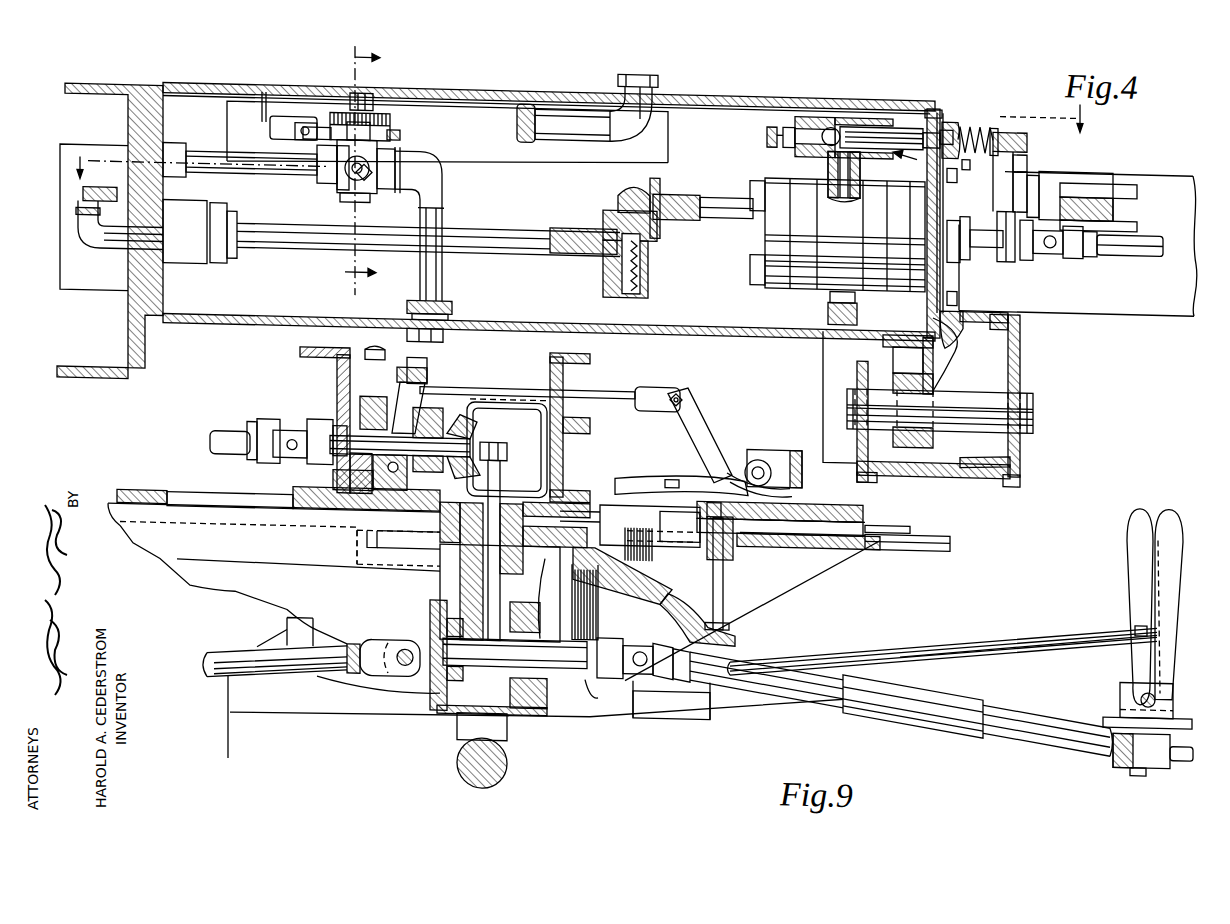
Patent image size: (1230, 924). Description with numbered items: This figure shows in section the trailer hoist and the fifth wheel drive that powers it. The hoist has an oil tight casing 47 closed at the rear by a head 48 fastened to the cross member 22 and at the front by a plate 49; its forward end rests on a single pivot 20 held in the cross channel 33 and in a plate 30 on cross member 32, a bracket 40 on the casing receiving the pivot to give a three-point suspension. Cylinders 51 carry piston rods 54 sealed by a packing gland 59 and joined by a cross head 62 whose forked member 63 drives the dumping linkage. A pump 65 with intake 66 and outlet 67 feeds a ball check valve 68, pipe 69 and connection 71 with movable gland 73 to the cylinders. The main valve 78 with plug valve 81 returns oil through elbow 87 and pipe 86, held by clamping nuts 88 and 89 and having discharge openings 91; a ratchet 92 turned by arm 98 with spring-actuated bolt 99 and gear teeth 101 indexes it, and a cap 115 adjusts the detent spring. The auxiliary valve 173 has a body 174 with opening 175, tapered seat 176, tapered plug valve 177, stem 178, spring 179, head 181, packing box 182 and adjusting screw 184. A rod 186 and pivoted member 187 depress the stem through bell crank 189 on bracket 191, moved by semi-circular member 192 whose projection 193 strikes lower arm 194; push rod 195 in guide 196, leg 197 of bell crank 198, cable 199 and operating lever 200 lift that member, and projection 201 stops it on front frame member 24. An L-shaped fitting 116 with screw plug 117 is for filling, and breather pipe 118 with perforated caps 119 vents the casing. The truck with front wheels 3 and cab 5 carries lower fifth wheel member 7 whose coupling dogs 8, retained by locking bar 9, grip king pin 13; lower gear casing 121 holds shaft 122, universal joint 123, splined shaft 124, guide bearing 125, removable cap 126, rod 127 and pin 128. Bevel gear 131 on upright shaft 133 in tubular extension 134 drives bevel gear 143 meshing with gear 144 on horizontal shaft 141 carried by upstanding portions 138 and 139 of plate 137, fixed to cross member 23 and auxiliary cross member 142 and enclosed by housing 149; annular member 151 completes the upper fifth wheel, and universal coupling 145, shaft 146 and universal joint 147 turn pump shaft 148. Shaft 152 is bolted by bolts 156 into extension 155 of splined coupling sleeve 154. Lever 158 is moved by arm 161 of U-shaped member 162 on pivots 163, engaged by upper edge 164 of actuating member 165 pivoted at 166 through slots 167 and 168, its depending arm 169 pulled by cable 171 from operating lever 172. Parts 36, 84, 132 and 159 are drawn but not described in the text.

In FIG. 4, the front wheels 3 is at (579, 141).
In FIG. 4, the cab 5 is at (357, 171).
In FIG. 9, the lower fifth wheel member 7 is at (200, 560).
In FIG. 9, the coupling dogs 8 is at (367, 544).
In FIG. 9, the locking bar 9 is at (565, 512).
In FIG. 9, the king pin 13 is at (440, 578).
In FIG. 4, the pivot 20 is at (1033, 402).
In FIG. 4, the cross member 22 is at (112, 391).
In FIG. 9, the cross member 23 is at (300, 358).
In FIG. 9, the front frame member 24 is at (860, 506).
In FIG. 4, the plate 30 is at (823, 437).
In FIG. 4, the cross member 32 is at (1020, 472).
In FIG. 4, the cross channel 33 is at (1012, 455).
In FIG. 4, the housing 36 is at (1140, 305).
In FIG. 4, the bracket 40 is at (935, 383).
In FIG. 4, the casing 47 is at (255, 334).
In FIG. 4, the head 48 is at (163, 310).
In FIG. 4, the plate 49 is at (927, 300).
In FIG. 4, the cylinders 51 is at (753, 262).
In FIG. 4, the piston rods 54 is at (1035, 182).
In FIG. 4, the packing gland 59 is at (1012, 170).
In FIG. 4, the cross head 62 is at (1098, 166).
In FIG. 4, the forked member 63 is at (1132, 175).
In FIG. 4, the pump 65 is at (771, 286).
In FIG. 4, the intake 66 is at (828, 309).
In FIG. 4, the outlet 67 is at (718, 218).
In FIG. 4, the ball check valve 68 is at (619, 196).
In FIG. 4, the pipe 69 is at (505, 231).
In FIG. 4, the connection 71 is at (200, 273).
In FIG. 4, the movable gland 73 is at (222, 216).
In FIG. 4, the valve 78 is at (337, 197).
In FIG. 4, the plug valve 81 is at (396, 162).
In FIG. 4, the shaft 84 is at (193, 160).
In FIG. 4, the pipe 86 is at (443, 281).
In FIG. 4, the elbow 87 is at (445, 190).
In FIG. 4, the clamping nut 88 is at (450, 306).
In FIG. 4, the clamping nut 89 is at (445, 341).
In FIG. 4, the discharge openings 91 is at (420, 303).
In FIG. 4, the ratchet 92 is at (398, 133).
In FIG. 4, the arm 98 is at (290, 124).
In FIG. 4, the spring-actuated bolt 99 is at (268, 128).
In FIG. 4, the gear teeth 101 is at (386, 118).
In FIG. 4, the cap 115 is at (372, 182).
In FIG. 4, the L-shaped fitting 116 is at (100, 260).
In FIG. 4, the screw plug 117 is at (100, 199).
In FIG. 4, the breather pipe 118 is at (565, 110).
In FIG. 4, the perforated caps 119 is at (640, 74).
In FIG. 9, the lower gear casing 121 is at (545, 716).
In FIG. 9, the shaft 122 is at (530, 680).
In FIG. 9, the universal joint 123 is at (640, 673).
In FIG. 9, the splined shaft 124 is at (707, 717).
In FIG. 9, the guide bearing 125 is at (452, 684).
In FIG. 9, the removable plate or cap 126 is at (435, 718).
In FIG. 9, the rod 127 is at (225, 688).
In FIG. 9, the pin 128 is at (402, 670).
In FIG. 9, the bevel gear 131 is at (507, 736).
In FIG. 9, the wall 132 is at (440, 625).
In FIG. 9, the upright shaft 133 is at (500, 462).
In FIG. 9, the tubular extension 134 is at (462, 554).
In FIG. 9, the plate 137 is at (318, 516).
In FIG. 9, the upstanding portion 138 is at (375, 430).
In FIG. 9, the upstanding portion 139 is at (418, 400).
In FIG. 9, the horizontal shaft 141 is at (380, 443).
In FIG. 9, the auxiliary cross member 142 is at (565, 378).
In FIG. 9, the bevel gear 143 is at (555, 502).
In FIG. 9, the bevel gear 144 is at (470, 430).
In FIG. 9, the universal coupling 145 is at (292, 446).
In FIG. 4, the shaft 146 is at (1130, 246).
In FIG. 9, the shaft 146 is at (228, 440).
In FIG. 4, the universal joint 147 is at (1050, 244).
In FIG. 4, the pump shaft 148 is at (990, 252).
In FIG. 9, the housing 149 is at (500, 405).
In FIG. 9, the annular member 151 is at (875, 528).
In FIG. 9, the shaft 152 is at (1180, 733).
In FIG. 9, the splined coupling sleeve 154 is at (935, 685).
In FIG. 9, the extension 155 is at (1022, 735).
In FIG. 9, the bolts 156 is at (1137, 763).
In FIG. 9, the lever 158 is at (428, 378).
In FIG. 9, the bolt 159 is at (373, 355).
In FIG. 9, the arm 161 is at (427, 366).
In FIG. 9, the U-shaped member 162 is at (698, 510).
In FIG. 9, the pivots 163 is at (393, 480).
In FIG. 9, the upper edge 164 is at (672, 540).
In FIG. 9, the actuating member 165 is at (645, 520).
In FIG. 9, the pivot 166 is at (542, 615).
In FIG. 9, the slot 167 is at (592, 528).
In FIG. 9, the slot 168 is at (712, 500).
In FIG. 9, the depending arm 169 is at (590, 700).
In FIG. 9, the cable 171 is at (1063, 635).
In FIG. 9, the operating lever 172 is at (1175, 503).
In FIG. 4, the auxiliary valve 173 is at (784, 151).
In FIG. 4, the valve body 174 is at (840, 112).
In FIG. 4, the opening 175 is at (828, 160).
In FIG. 4, the tapered seat 176 is at (870, 121).
In FIG. 4, the tapered plug valve 177 is at (898, 121).
In FIG. 4, the stem 178 is at (953, 124).
In FIG. 4, the spring 179 is at (966, 158).
In FIG. 4, the head 181 is at (994, 119).
In FIG. 4, the packing box 182 is at (948, 113).
In FIG. 4, the adjusting screw 184 is at (767, 130).
In FIG. 9, the rod 186 is at (620, 389).
In FIG. 4, the member 187 is at (1027, 131).
In FIG. 9, the bell crank 189 is at (713, 402).
In FIG. 9, the bracket 191 is at (762, 452).
In FIG. 9, the semi-circular member 192 is at (737, 483).
In FIG. 9, the projection 193 is at (628, 485).
In FIG. 9, the lower arm 194 is at (668, 478).
In FIG. 9, the push rod 195 is at (725, 576).
In FIG. 9, the guide 196 is at (735, 542).
In FIG. 9, the leg 197 is at (735, 633).
In FIG. 9, the bell crank 198 is at (598, 606).
In FIG. 9, the cable 199 is at (1068, 622).
In FIG. 9, the operating lever 200 is at (1142, 498).
In FIG. 9, the projection 201 is at (835, 499).